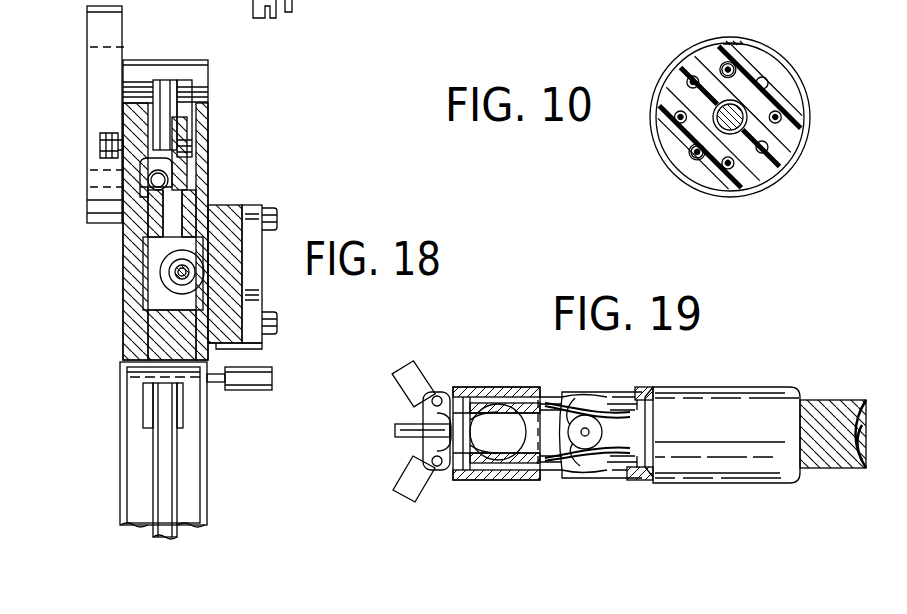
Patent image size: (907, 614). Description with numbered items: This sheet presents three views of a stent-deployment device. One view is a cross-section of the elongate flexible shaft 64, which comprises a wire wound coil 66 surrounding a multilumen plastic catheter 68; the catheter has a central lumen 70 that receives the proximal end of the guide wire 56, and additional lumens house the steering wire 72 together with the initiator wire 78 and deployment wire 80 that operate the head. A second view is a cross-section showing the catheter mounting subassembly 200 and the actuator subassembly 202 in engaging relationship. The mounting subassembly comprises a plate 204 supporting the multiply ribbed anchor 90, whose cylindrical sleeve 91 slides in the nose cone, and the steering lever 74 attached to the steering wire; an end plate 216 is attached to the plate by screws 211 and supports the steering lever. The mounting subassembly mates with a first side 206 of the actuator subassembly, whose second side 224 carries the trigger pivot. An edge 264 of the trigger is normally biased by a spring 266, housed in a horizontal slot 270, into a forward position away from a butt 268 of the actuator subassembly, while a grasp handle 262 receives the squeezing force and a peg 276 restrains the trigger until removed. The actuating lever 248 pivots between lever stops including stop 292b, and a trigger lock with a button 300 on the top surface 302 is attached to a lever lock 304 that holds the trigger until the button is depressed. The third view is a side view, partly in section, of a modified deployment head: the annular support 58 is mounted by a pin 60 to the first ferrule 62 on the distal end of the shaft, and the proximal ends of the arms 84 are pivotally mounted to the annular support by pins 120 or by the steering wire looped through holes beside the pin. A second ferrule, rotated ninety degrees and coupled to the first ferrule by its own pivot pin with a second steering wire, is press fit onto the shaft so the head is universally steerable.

In FIG. 18, the actuating lever 248 is at (98, 50).
In FIG. 18, the edge of trigger 264 is at (27, 4).
In FIG. 18, the steering lever 74 is at (706, 6).
In FIG. 18, the second side of actuator subassembly 224 is at (131, 341).
In FIG. 18, the first side of actuator subassembly 206 is at (210, 120).
In FIG. 18, the top surface of control mechanism 302 is at (161, 115).
In FIG. 18, the button 300 is at (198, 86).
In FIG. 18, the lever lock 304 is at (204, 177).
In FIG. 18, the horizontal slot 270 is at (170, 164).
In FIG. 18, the spring 266 is at (138, 190).
In FIG. 18, the lever stop 292b is at (100, 146).
In FIG. 18, the multiply ribbed anchor 90 is at (157, 273).
In FIG. 18, the cylindrical sleeve 91 is at (192, 295).
In FIG. 18, the catheter mounting subassembly 200 is at (266, 340).
In FIG. 18, the end plate 216 is at (255, 285).
In FIG. 18, the screws 211 is at (280, 218).
In FIG. 18, the plate 204 is at (230, 342).
In FIG. 18, the actuator subassembly 202 is at (112, 406).
In FIG. 18, the butt 268 is at (136, 487).
In FIG. 18, the grasp handle 262 is at (170, 488).
In FIG. 18, the peg 276 is at (242, 382).
In FIG. 10, the wire wound coil 66 is at (718, 188).
In FIG. 10, the central lumen 70 is at (778, 185).
In FIG. 10, the multilumen plastic catheter 68 is at (681, 143).
In FIG. 10, the steering wire 72 is at (735, 66).
In FIG. 19, the steering wire 72 is at (570, 460).
In FIG. 10, the initiator wire 78 is at (665, 117).
In FIG. 10, the deployment wire 80 is at (694, 81).
In FIG. 10, the guide wire 56 is at (750, 109).
In FIG. 19, the arms 84 is at (413, 393).
In FIG. 19, the pins 120 is at (437, 397).
In FIG. 19, the annular support 58 is at (462, 473).
In FIG. 19, the pin 60 is at (470, 473).
In FIG. 19, the first ferrule 62 is at (515, 390).
In FIG. 19, the elongate flexible shaft 64 is at (843, 460).